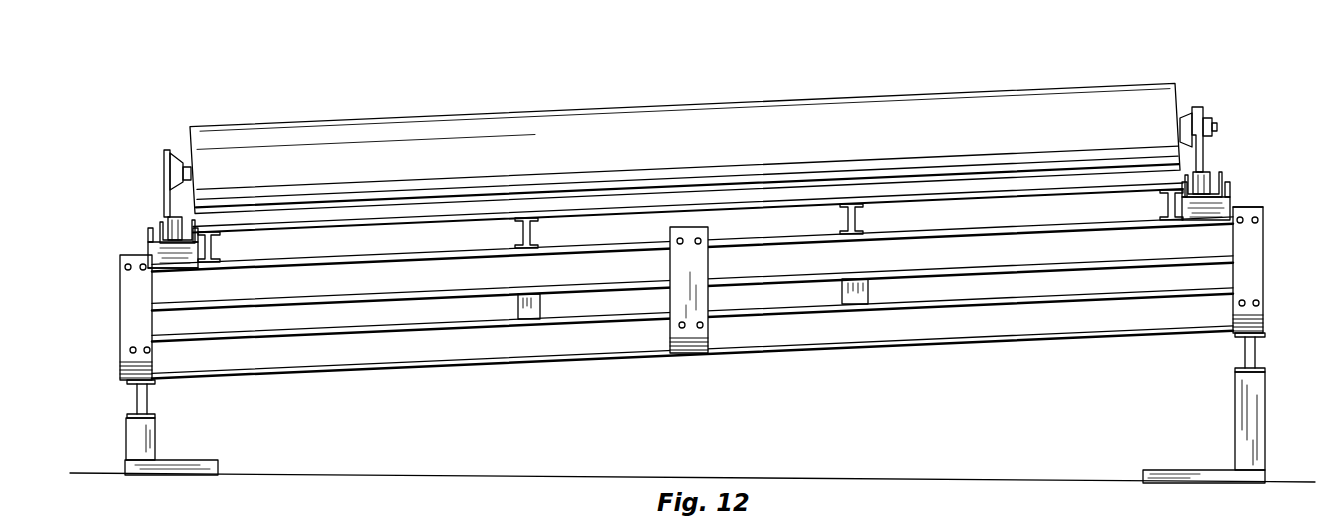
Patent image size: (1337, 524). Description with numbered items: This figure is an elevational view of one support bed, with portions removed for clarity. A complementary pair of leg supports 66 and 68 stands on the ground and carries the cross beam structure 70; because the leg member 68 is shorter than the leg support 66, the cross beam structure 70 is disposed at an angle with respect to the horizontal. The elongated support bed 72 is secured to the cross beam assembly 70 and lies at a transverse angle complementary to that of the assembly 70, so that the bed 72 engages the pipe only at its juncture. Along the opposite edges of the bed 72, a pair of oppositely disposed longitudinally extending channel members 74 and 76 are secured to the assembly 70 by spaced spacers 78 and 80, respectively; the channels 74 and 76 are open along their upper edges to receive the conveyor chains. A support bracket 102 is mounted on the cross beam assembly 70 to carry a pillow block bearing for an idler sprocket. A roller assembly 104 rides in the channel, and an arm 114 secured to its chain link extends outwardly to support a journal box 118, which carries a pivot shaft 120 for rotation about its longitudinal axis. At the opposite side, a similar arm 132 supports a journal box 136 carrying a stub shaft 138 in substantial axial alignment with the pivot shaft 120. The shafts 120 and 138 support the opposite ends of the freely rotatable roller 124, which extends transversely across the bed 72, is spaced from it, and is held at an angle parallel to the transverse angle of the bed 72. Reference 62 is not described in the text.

The frame 62 is at (610, 368).
The leg support 66 is at (1257, 407).
The leg support 68 is at (138, 440).
The cross beam structure 70 is at (992, 320).
The support bed 72 is at (1155, 185).
The channel member 74 is at (1230, 183).
The channel member 76 is at (148, 232).
The spacer 78 is at (1208, 215).
The spacer 80 is at (162, 262).
The support bracket 102 is at (140, 323).
The roller assembly 104 is at (160, 228).
The arm 114 is at (163, 157).
The journal box 118 is at (180, 165).
The pivot shaft 120 is at (193, 172).
The roller 124 is at (312, 135).
The arm 132 is at (1203, 110).
The journal box 136 is at (1192, 110).
The pivot shaft 138 is at (1187, 114).